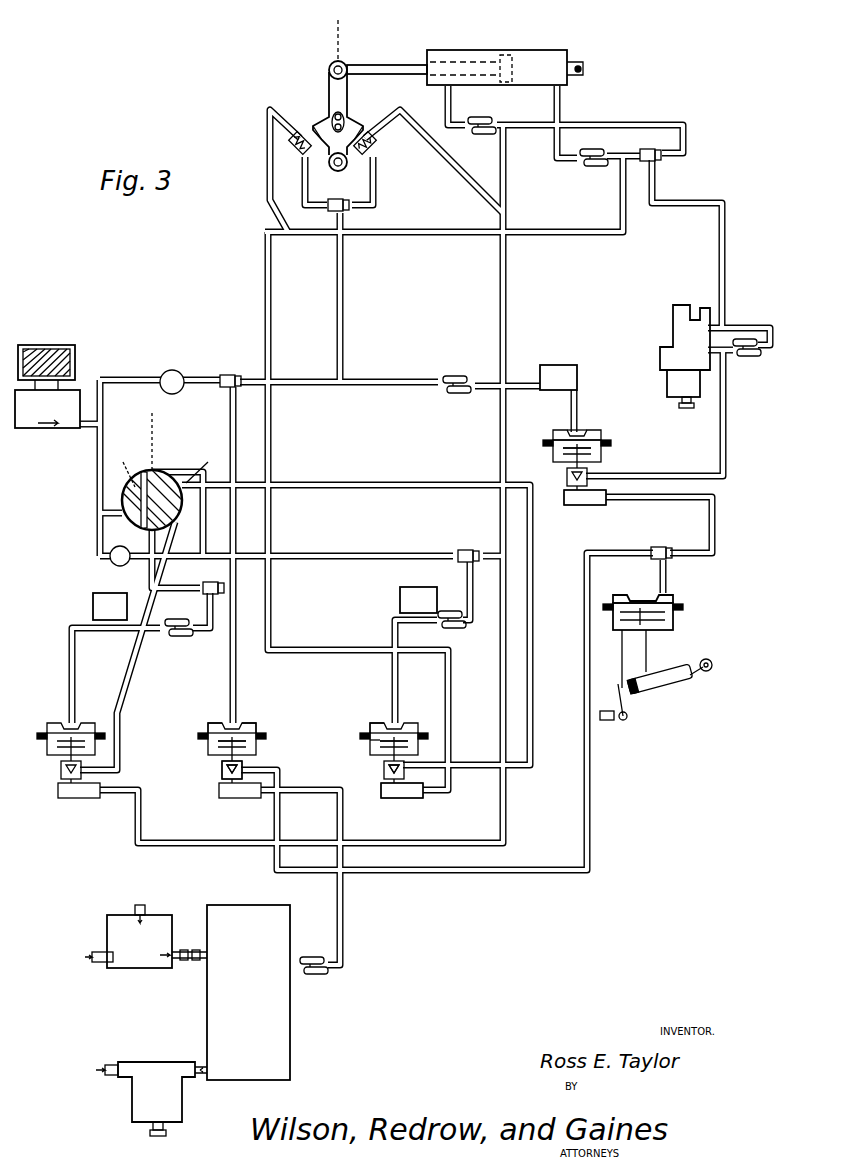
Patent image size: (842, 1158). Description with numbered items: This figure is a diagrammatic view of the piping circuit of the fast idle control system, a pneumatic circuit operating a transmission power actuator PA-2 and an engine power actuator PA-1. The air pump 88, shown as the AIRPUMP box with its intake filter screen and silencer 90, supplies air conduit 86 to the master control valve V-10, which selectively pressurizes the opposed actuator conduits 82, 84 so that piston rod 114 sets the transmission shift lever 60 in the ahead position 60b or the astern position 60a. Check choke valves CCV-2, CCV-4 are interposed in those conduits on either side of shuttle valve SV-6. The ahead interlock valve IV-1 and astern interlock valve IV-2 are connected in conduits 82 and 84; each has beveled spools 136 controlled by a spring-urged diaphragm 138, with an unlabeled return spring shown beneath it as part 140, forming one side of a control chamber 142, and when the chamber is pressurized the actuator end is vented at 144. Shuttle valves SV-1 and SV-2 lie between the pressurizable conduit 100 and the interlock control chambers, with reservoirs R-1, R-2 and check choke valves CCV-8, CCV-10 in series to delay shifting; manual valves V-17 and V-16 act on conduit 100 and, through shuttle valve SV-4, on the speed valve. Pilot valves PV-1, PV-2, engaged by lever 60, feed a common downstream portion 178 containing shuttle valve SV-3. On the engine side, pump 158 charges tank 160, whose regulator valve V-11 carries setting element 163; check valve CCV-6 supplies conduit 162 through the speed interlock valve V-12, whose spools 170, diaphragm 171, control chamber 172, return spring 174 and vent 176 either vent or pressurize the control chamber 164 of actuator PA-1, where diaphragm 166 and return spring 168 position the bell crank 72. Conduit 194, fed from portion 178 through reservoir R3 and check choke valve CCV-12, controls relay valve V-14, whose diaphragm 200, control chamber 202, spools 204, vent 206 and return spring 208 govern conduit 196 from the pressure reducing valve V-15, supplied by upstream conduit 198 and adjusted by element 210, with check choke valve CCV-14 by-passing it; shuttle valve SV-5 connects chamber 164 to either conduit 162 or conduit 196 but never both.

The transmission shift lever 60 is at (328, 64).
The astern position 60a is at (352, 145).
The ahead position 60b is at (327, 145).
The piston rod 114 is at (374, 66).
The air conduit 82 is at (273, 272).
The air conduit 84 is at (507, 280).
The air conduit 86 is at (98, 475).
The source of pressure 88 is at (86, 378).
The intake filter screen and silencer 90 is at (72, 345).
The pressurizable conduit 100 is at (298, 556).
The beveled spools 136 is at (382, 770).
The flexible diaphragm 138 is at (375, 727).
The ahead interlock diaphragm 140 is at (380, 742).
The valve control chamber 142 is at (386, 723).
The atmosphere connected vent 144 is at (425, 795).
The pneumatic discharge pump 158 is at (158, 915).
The reservoir tank 160 is at (292, 995).
The control conduit 162 is at (348, 880).
The valve setting element 163 is at (166, 1134).
The control chamber 164 is at (630, 583).
The diaphragm 166 is at (677, 610).
The return spring 168 is at (655, 632).
The beveled spool elements 170 is at (220, 770).
The flexible diaphragm 171 is at (246, 723).
The control chamber 172 is at (222, 723).
The return spring 174 is at (218, 742).
The vent 176 is at (262, 765).
The common downstream conduit portion 178 is at (353, 214).
The conduit 194 is at (580, 397).
The conduit 196 is at (715, 500).
The conduit 198 is at (724, 230).
The controlled diaphragm 200 is at (566, 439).
The control chamber 202 is at (573, 428).
The spool valve parts 204 is at (565, 478).
The vent 206 is at (606, 500).
The return spring 208 is at (553, 452).
The adjustable element 210 is at (680, 403).
The bell crank 72 is at (648, 690).
The transmission power actuator PA-2 is at (490, 53).
The engine power actuator PA-1 is at (673, 616).
The pilot valve PV-1 is at (292, 153).
The pilot valve PV-2 is at (378, 152).
The shuttle valve SV-1 is at (225, 585).
The shuttle valve SV-2 is at (478, 550).
The shuttle valve SV-3 is at (326, 211).
The shuttle valve SV-4 is at (238, 370).
The shuttle valve SV-5 is at (683, 548).
The shuttle valve SV-6 is at (646, 147).
The check choke valve CCV-2 is at (470, 118).
The check choke valve CCV-4 is at (588, 168).
The check valve CCV-6 is at (310, 957).
The check choke valve CCV-8 is at (175, 636).
The check choke valve CCV-10 is at (442, 628).
The check choke valve CCV-12 is at (450, 392).
The check choke valve CCV-14 is at (765, 361).
The master control valve V-10 is at (128, 522).
The constant pressure inlet regulator valve V-11 is at (183, 1110).
The speed interlock valve V-12 is at (232, 782).
The relay valve V-14 is at (603, 452).
The pressure reducing valve V-15 is at (673, 318).
The manually operatable valve V-16 is at (172, 370).
The manually operatable valve V-17 is at (110, 565).
The ahead interlock valve IV-1 is at (404, 776).
The astern interlock valve IV-2 is at (71, 793).
The air reservoir chamber R-1 is at (118, 622).
The air reservoir chamber R-2 is at (400, 598).
The reservoir R3 is at (540, 372).
The air pump AIRPUMP is at (47, 409).